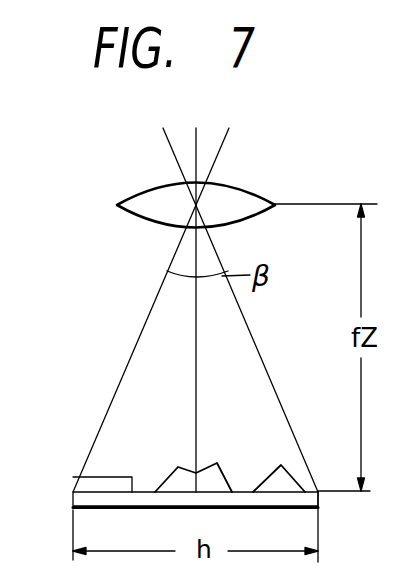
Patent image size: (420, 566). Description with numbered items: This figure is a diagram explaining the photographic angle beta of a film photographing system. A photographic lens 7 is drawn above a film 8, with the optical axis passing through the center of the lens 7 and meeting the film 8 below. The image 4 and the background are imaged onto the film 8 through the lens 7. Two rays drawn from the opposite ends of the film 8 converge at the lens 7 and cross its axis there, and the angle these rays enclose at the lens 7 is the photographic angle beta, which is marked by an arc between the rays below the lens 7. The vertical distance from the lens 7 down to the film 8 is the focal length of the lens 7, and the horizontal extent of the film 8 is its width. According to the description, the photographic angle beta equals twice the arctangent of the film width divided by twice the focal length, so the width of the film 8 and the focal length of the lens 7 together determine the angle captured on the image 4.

The photographic lens 7 is at (246, 190).
The image 4 is at (175, 467).
The film 8 is at (83, 509).